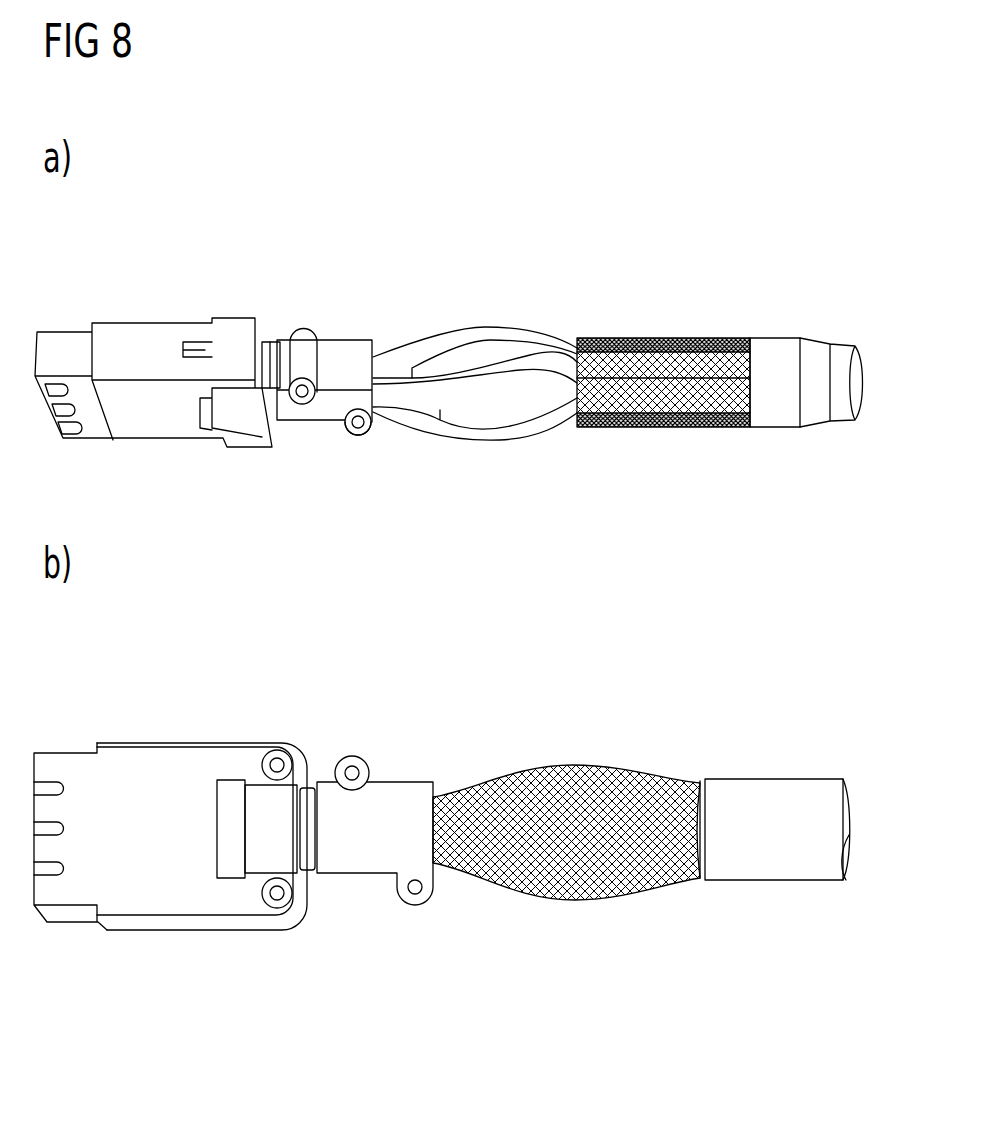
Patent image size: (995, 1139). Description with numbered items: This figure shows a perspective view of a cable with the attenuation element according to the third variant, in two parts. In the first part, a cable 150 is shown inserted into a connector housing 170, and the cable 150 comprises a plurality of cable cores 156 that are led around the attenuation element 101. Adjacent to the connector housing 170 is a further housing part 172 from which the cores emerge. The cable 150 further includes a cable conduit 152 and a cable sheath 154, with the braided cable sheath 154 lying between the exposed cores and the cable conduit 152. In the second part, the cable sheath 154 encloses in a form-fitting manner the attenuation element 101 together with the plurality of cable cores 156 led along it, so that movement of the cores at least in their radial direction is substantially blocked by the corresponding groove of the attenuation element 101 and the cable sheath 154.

The attenuation element 101 is at (452, 412).
The cable 150 is at (619, 590).
The cable conduit 152 is at (842, 352).
The cable sheath 154 is at (675, 422).
The plurality of cable cores 156 is at (535, 417).
The connector housing 170 is at (88, 314).
The connector housing 172 is at (320, 410).